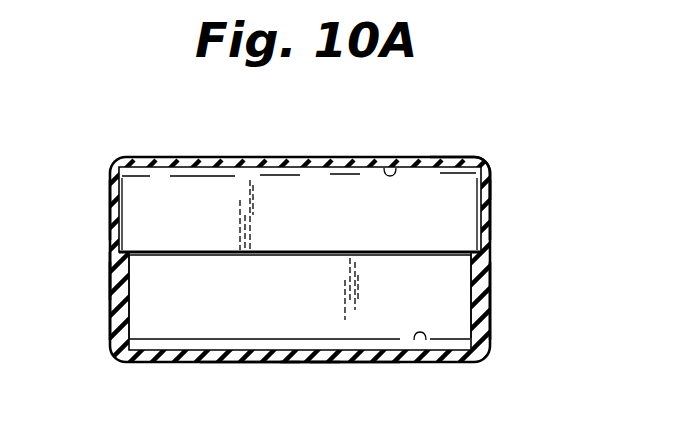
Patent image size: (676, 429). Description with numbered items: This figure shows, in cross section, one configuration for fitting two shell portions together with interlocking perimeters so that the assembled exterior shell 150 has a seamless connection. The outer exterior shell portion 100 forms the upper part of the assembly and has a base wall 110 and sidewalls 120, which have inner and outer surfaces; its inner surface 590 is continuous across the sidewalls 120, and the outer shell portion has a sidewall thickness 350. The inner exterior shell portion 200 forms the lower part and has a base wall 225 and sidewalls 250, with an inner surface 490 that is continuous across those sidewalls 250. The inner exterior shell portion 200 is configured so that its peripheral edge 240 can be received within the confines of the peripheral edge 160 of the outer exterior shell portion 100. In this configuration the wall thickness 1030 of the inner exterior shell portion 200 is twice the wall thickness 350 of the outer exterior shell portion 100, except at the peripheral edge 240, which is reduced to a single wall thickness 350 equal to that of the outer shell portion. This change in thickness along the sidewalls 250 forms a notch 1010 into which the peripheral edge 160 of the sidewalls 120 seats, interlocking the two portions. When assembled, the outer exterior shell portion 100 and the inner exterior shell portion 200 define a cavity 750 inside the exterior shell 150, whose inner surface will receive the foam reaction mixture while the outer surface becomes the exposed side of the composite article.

The outer exterior shell portion 100 is at (311, 157).
The base wall 110 is at (434, 164).
The sidewall 120 is at (110, 203).
The exterior shell 150 is at (473, 155).
The peripheral edge 160 is at (100, 251).
The inner exterior shell portion 200 is at (351, 363).
The base wall 225 is at (313, 363).
The peripheral edge 240 is at (205, 259).
The sidewall 250 is at (110, 326).
The sidewall thickness 350 is at (229, 163).
The inner surface 490 is at (428, 342).
The inner surface 590 is at (388, 168).
The cavity 750 is at (188, 320).
The notch 1010 is at (477, 291).
The wall thickness 1030 is at (254, 346).